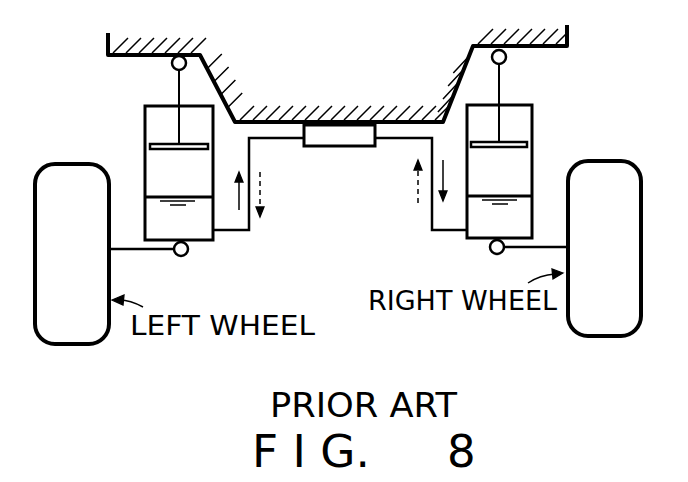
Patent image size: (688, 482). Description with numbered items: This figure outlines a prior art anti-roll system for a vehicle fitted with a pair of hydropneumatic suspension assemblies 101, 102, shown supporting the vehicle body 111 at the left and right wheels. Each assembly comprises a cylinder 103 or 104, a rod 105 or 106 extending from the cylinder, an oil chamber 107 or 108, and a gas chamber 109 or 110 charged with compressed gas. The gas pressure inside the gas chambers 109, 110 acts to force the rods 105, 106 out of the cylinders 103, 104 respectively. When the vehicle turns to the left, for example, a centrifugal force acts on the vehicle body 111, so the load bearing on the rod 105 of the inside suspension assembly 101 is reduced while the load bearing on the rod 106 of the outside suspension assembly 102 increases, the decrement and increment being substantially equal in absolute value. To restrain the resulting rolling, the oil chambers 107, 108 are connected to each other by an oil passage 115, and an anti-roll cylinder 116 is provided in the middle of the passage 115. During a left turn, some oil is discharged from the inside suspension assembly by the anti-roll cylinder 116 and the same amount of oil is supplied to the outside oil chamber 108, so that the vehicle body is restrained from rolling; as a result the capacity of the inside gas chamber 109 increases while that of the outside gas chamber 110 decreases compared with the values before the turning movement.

The hydropneumatic suspension assembly 101 is at (122, 140).
The hydropneumatic suspension assembly 102 is at (555, 147).
The cylinder 103 is at (145, 130).
The cylinder 104 is at (533, 132).
The rod 105 is at (178, 91).
The rod 106 is at (500, 90).
The oil chamber 107 is at (212, 241).
The oil chamber 108 is at (467, 239).
The gas chamber 109 is at (145, 165).
The gas chamber 110 is at (533, 180).
The vehicle body 111 is at (283, 98).
The oil passage 115 is at (249, 231).
The anti-roll cylinder 116 is at (340, 147).